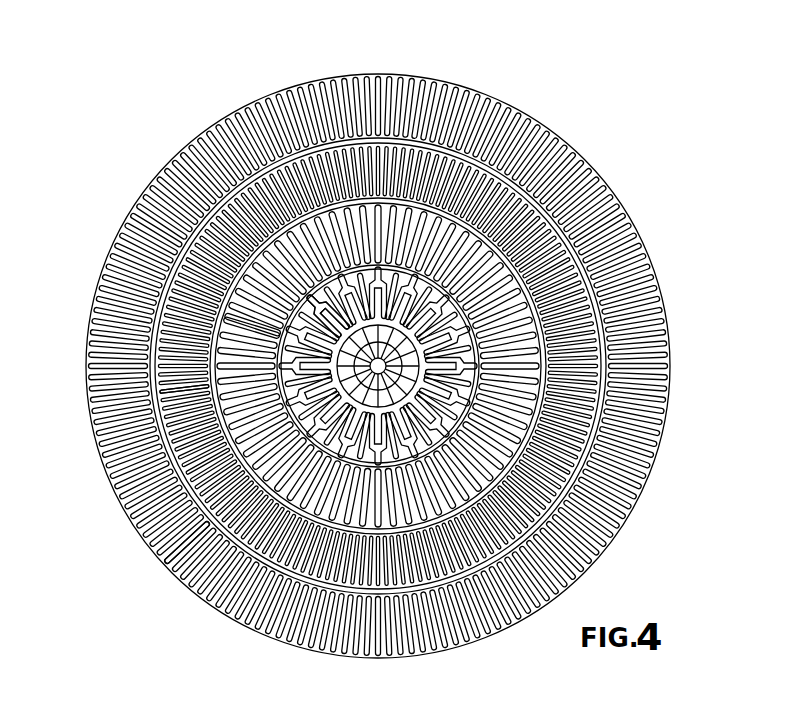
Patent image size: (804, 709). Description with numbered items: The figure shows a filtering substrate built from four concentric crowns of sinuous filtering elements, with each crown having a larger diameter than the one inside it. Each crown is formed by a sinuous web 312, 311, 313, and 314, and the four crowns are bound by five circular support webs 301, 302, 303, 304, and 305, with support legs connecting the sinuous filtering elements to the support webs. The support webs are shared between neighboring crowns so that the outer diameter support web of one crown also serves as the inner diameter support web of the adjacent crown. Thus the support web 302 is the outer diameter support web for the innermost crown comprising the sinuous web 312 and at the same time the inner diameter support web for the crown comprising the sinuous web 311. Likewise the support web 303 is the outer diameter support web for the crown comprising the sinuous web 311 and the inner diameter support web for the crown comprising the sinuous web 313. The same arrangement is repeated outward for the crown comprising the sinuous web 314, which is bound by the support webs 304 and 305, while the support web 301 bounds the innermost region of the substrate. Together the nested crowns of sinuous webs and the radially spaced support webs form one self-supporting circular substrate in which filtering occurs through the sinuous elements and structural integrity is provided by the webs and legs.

The support web 301 is at (412, 290).
The support web 302 is at (470, 262).
The support web 303 is at (528, 306).
The support web 304 is at (598, 332).
The support web 305 is at (672, 377).
The sinuous web 311 is at (288, 337).
The sinuous web 312 is at (313, 293).
The sinuous web 313 is at (195, 385).
The sinuous web 314 is at (192, 540).